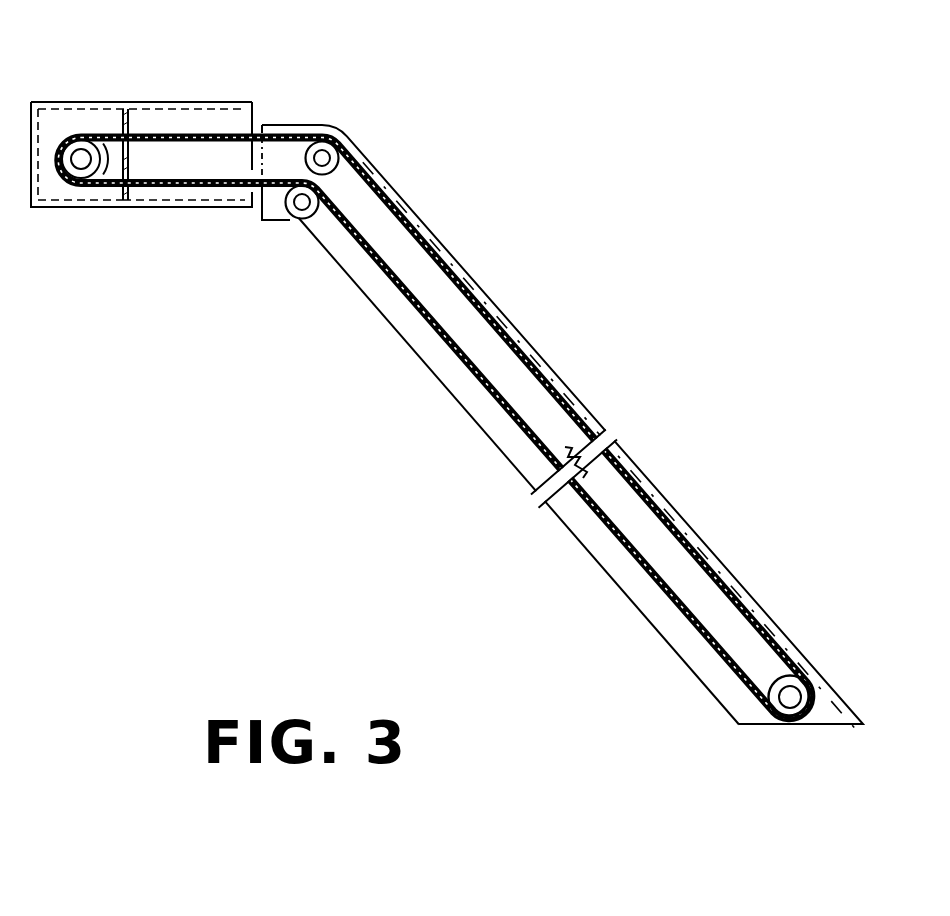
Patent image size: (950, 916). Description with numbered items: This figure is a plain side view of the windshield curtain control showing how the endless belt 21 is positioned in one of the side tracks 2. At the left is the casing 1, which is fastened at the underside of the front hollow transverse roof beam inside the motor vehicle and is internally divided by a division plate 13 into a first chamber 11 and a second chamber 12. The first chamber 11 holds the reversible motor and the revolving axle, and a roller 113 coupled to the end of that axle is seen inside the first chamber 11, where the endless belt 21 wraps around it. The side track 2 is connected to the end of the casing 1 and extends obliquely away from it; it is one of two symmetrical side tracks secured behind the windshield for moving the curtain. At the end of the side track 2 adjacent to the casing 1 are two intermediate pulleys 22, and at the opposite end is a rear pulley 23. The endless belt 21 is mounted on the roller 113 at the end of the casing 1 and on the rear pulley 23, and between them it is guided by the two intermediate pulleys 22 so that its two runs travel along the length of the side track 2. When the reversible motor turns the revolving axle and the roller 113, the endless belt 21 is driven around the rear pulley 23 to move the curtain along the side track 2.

The casing 1 is at (181, 105).
The first chamber 11 is at (54, 189).
The second chamber 12 is at (181, 194).
The division plate 13 is at (131, 106).
The roller 113 is at (76, 128).
The side track 2 is at (543, 361).
The endless belt 21 is at (382, 186).
The intermediate pulleys 22 is at (325, 142).
The rear pulley 23 is at (799, 686).